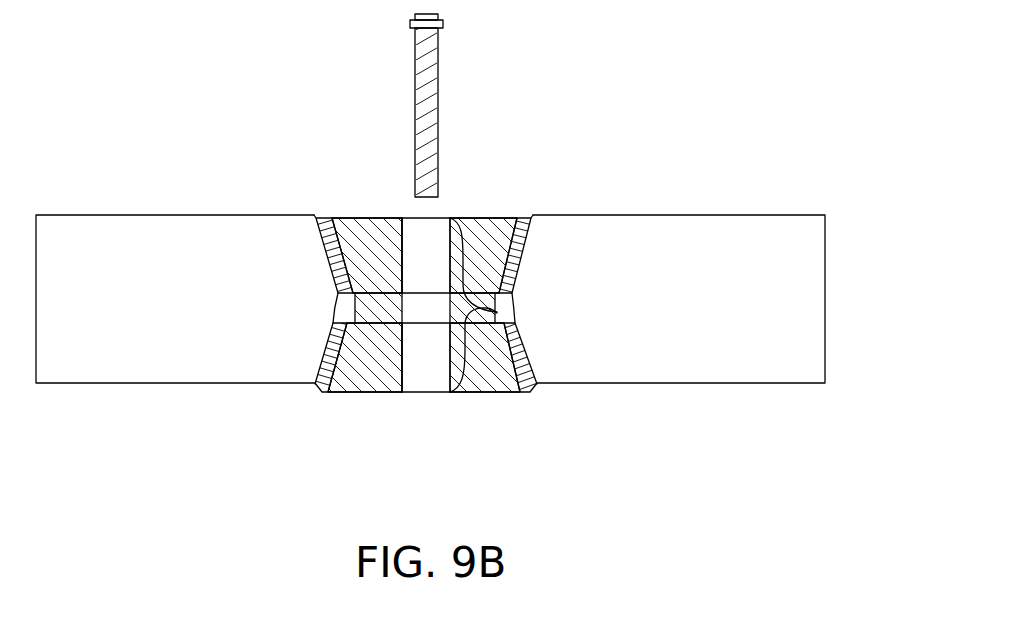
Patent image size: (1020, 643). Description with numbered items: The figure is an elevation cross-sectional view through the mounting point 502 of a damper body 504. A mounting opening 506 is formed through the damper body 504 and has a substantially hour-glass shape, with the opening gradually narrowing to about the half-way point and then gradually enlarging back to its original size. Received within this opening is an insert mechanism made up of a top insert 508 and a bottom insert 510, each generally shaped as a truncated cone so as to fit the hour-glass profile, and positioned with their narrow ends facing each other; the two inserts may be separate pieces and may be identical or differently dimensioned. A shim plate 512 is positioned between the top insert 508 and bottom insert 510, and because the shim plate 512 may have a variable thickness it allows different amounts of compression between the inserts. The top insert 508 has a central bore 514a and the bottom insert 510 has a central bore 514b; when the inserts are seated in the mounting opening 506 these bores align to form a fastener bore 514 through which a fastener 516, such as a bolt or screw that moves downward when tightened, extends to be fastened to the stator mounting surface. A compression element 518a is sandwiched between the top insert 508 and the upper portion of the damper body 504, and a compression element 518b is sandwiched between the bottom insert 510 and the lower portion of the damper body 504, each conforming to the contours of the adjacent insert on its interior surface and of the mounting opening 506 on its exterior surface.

The mounting point 502 is at (583, 426).
The damper body 504 is at (713, 223).
The mounting opening 506 is at (532, 218).
The top insert 508 is at (485, 240).
The bottom insert 510 is at (500, 375).
The shim plate 512 is at (370, 312).
The fastener bore 514 is at (513, 313).
The central bore 514a is at (413, 265).
The central bore 514b is at (430, 372).
The fastener 516 is at (432, 80).
The compression element 518a is at (327, 238).
The compression element 518b is at (319, 383).